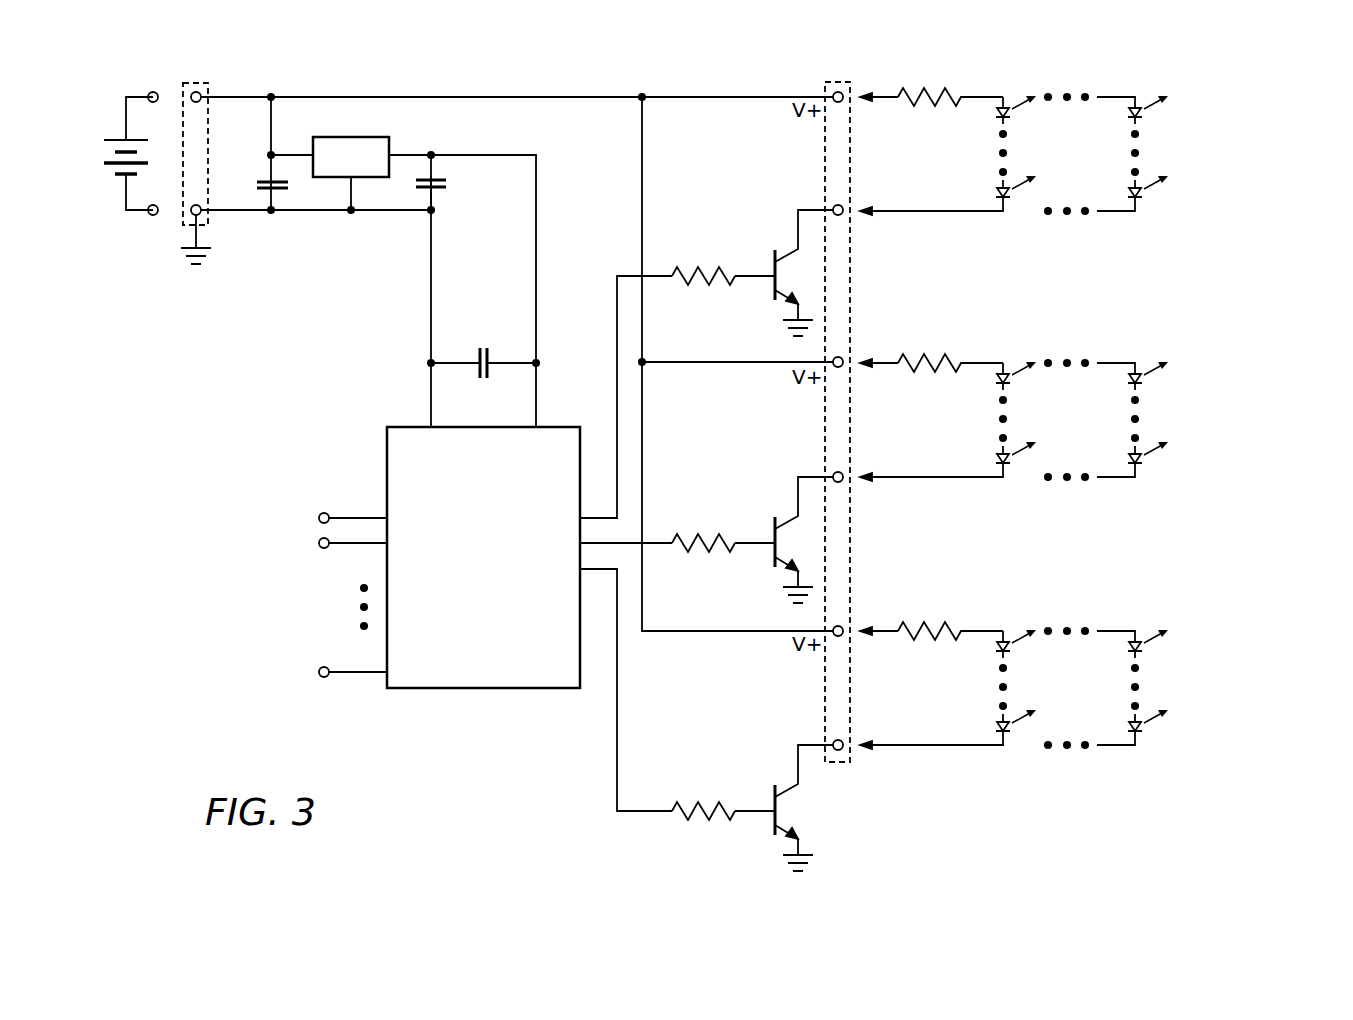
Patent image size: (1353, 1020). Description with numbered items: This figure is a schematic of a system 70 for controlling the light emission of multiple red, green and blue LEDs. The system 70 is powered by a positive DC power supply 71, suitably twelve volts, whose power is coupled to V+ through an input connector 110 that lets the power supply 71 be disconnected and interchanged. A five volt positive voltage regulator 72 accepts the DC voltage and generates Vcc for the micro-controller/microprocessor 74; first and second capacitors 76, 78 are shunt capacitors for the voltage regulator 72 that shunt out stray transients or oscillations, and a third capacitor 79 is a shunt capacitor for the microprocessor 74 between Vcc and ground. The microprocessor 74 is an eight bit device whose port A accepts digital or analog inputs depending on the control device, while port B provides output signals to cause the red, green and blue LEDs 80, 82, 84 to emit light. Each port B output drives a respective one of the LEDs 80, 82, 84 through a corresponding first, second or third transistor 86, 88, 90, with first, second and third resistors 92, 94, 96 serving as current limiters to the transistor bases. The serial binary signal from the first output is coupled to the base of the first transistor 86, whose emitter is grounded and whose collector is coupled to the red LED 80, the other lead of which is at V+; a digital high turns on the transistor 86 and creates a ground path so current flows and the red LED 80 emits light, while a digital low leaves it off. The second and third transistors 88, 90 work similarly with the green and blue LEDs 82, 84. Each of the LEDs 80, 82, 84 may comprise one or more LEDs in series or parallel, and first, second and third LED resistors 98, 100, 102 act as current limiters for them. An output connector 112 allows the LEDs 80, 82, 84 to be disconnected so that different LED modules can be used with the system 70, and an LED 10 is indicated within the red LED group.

The light emitting diode 10 is at (1046, 129).
The system 70 is at (250, 671).
The positive DC power supply 71 is at (118, 140).
The voltage regulator 72 is at (383, 137).
The micro-controller/microprocessor 74 is at (386, 458).
The first capacitor 76 is at (262, 180).
The second capacitor 78 is at (442, 190).
The third capacitor 79 is at (477, 358).
The red LED 80 is at (1003, 105).
The green LED 82 is at (1003, 371).
The blue LED 84 is at (1003, 639).
The first transistor 86 is at (778, 294).
The second transistor 88 is at (778, 561).
The third transistor 90 is at (778, 829).
The first resistor 92 is at (731, 268).
The second resistor 94 is at (731, 535).
The third resistor 96 is at (731, 803).
The first LED resistor 98 is at (912, 105).
The second LED resistor 100 is at (912, 371).
The third LED resistor 102 is at (912, 639).
The input connector 110 is at (196, 83).
The output connector 112 is at (836, 82).